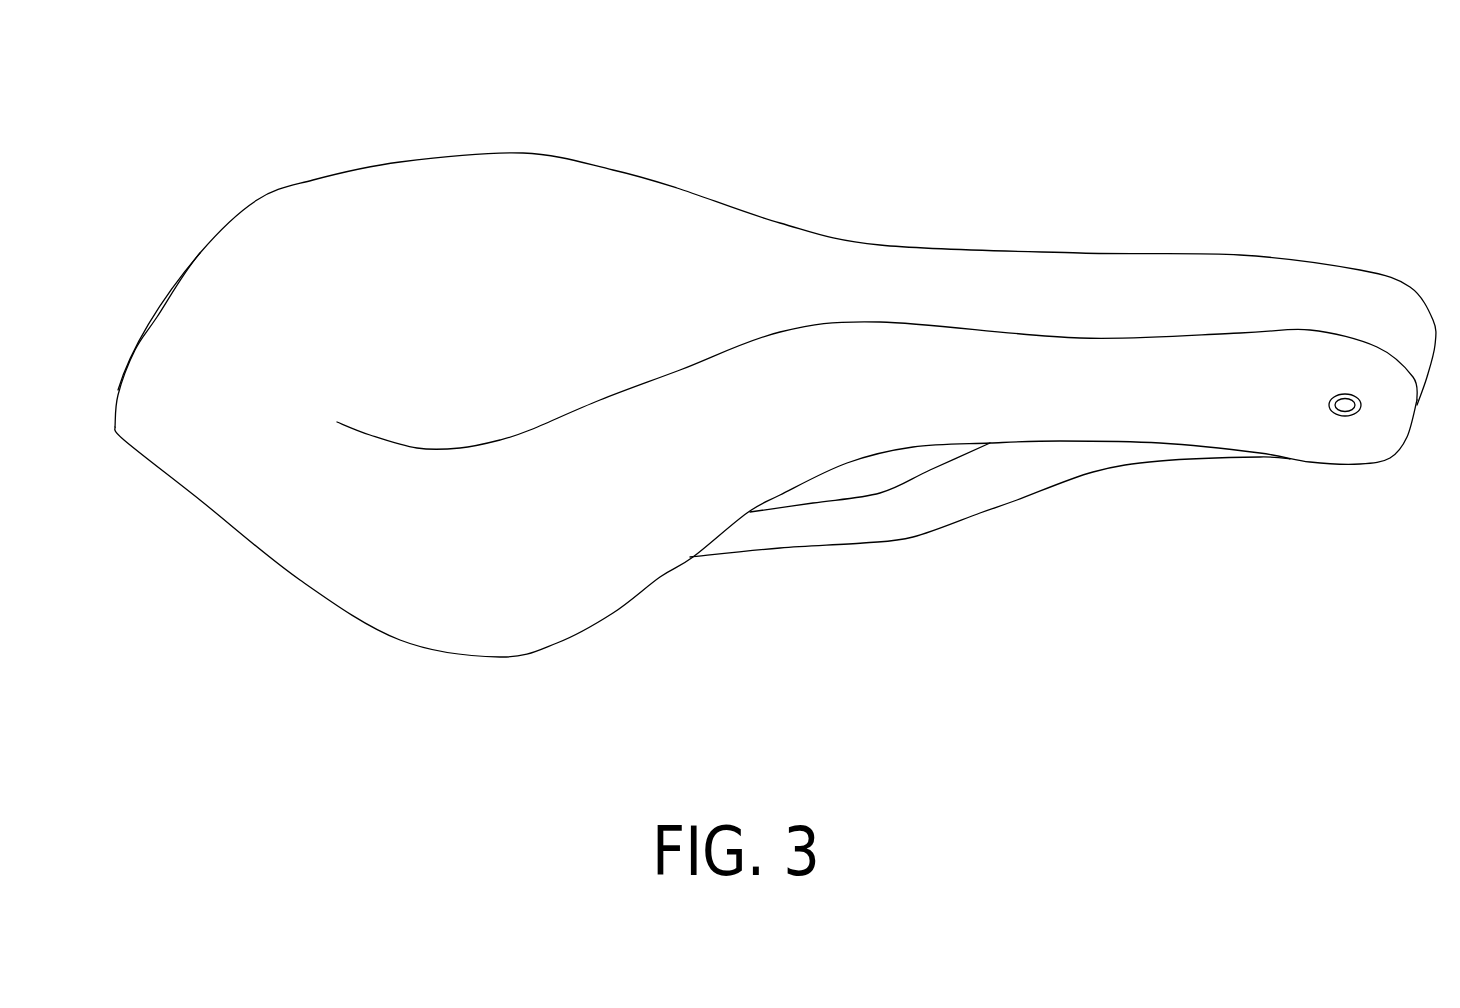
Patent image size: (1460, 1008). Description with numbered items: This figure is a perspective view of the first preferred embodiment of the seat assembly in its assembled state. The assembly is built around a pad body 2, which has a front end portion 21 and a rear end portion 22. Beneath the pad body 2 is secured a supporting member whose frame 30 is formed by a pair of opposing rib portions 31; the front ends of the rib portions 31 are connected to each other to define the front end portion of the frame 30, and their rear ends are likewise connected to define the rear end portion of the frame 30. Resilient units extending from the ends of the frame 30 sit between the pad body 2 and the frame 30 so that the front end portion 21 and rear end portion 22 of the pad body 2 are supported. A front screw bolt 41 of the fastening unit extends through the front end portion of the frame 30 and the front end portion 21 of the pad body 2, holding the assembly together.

The pad body 2 is at (679, 180).
The front end portion 21 is at (1250, 297).
The rear end portion 22 is at (217, 278).
The frame 30 is at (855, 568).
The rib portions 31 is at (780, 537).
The front screw bolt 41 is at (1345, 414).